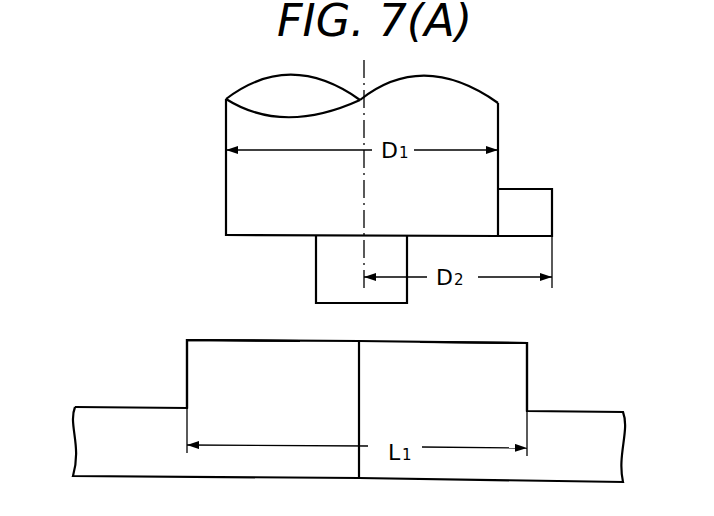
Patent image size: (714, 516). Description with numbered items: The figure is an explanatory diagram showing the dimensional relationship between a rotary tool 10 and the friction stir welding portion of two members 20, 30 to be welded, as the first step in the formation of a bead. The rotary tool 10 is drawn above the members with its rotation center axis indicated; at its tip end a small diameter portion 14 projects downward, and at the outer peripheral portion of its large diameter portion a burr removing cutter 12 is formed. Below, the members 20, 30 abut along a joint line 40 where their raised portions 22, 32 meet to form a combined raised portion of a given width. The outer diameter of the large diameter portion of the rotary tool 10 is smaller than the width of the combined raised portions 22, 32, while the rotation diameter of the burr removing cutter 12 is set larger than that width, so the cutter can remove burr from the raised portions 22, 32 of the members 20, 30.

The rotary tool 10 is at (472, 122).
The burr removing cutter 12 is at (528, 215).
The small diameter portion 14 is at (331, 259).
The member to be welded 20 is at (113, 438).
The raised portion 22 is at (212, 364).
The member to be welded 30 is at (597, 419).
The raised portion 32 is at (488, 373).
The joint line 40 is at (357, 386).